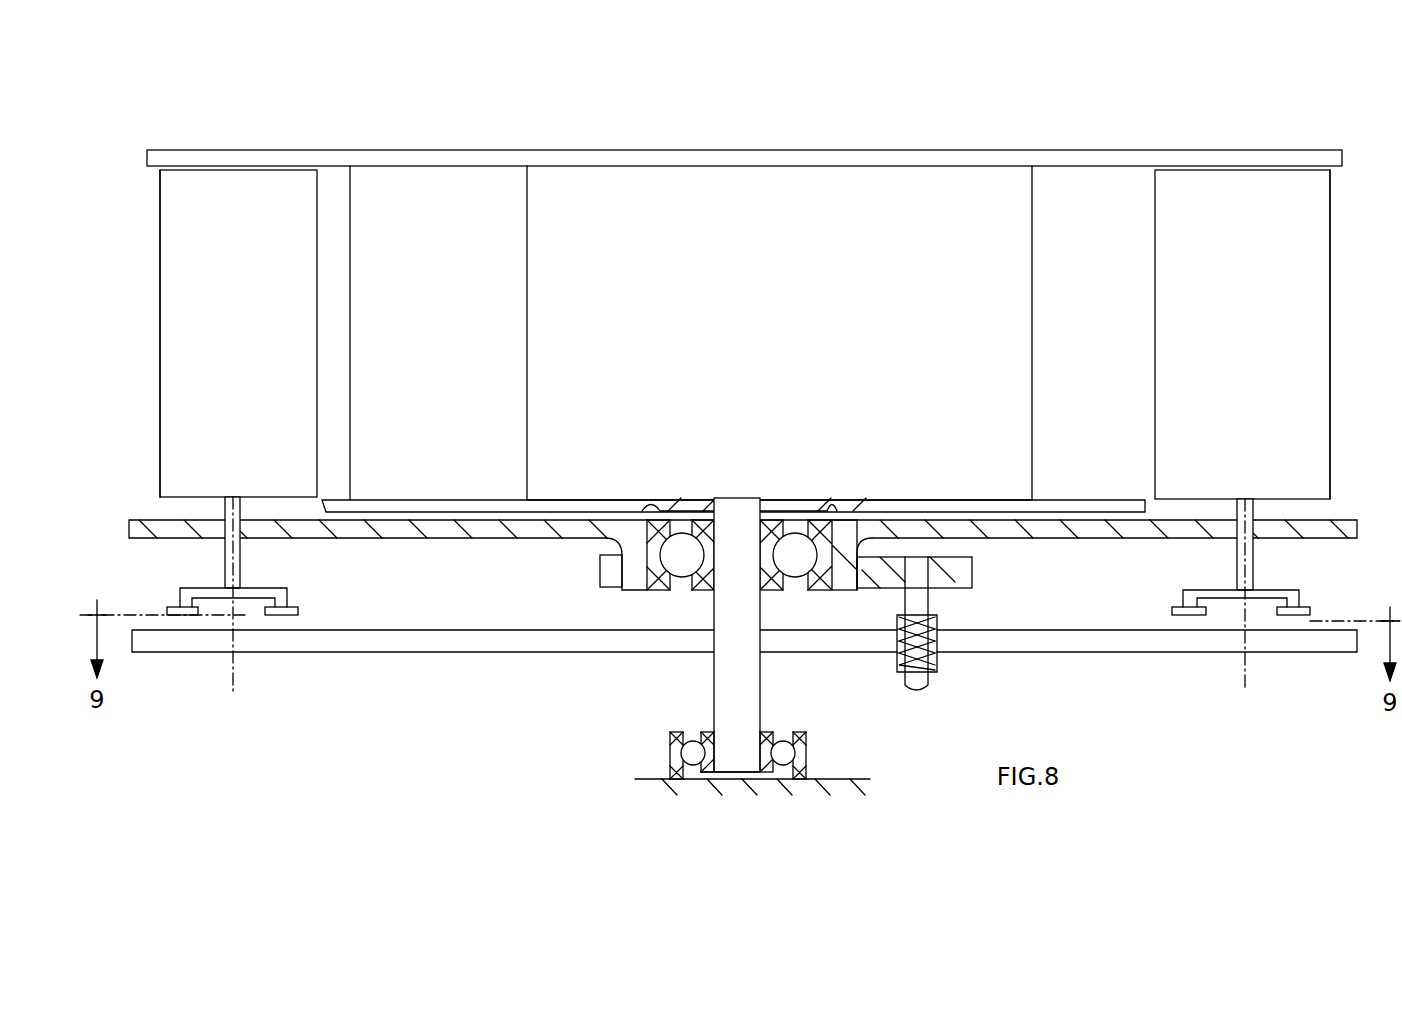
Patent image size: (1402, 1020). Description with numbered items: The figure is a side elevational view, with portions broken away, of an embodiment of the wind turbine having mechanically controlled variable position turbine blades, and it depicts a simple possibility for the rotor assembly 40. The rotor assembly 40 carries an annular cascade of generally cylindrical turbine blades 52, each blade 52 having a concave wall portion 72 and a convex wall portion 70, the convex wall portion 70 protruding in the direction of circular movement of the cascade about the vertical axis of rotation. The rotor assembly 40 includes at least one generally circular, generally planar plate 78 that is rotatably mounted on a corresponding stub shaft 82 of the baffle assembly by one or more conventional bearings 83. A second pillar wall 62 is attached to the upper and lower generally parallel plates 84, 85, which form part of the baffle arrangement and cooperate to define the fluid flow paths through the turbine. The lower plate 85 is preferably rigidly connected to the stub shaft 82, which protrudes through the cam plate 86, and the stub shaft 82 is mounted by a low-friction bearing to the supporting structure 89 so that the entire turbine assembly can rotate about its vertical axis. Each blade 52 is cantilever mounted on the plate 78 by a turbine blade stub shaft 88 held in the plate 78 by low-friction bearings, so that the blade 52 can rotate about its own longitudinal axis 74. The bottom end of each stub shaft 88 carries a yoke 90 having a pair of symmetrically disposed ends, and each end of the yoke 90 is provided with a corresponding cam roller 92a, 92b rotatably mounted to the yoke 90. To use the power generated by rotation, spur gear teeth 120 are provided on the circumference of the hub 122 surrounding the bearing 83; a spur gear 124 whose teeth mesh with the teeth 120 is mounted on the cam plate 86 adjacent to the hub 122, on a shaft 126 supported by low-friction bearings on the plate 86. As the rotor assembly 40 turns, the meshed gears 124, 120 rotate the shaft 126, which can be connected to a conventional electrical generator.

The rotor assembly 40 is at (283, 252).
The turbine blade 52 is at (217, 236).
The second pillar wall 62 is at (772, 348).
The convex wall portion 70 is at (180, 308).
The concave wall portion 72 is at (1312, 296).
The longitudinal axis 74 is at (243, 690).
The plate 78 is at (1075, 530).
The stub shaft 82 is at (720, 700).
The bearing 83 is at (830, 585).
The upper plate 84 is at (975, 160).
The lower plate 85 is at (470, 505).
The cam plate 86 is at (563, 645).
The turbine blade stub shaft 88 is at (228, 552).
The supporting structure 89 is at (835, 779).
The yoke 90 is at (215, 600).
The cam roller 92a is at (183, 618).
The cam roller 92b is at (290, 618).
The spur gear teeth 120 is at (605, 578).
The hub 122 is at (652, 585).
The spur gear 124 is at (938, 572).
The shaft 126 is at (918, 685).